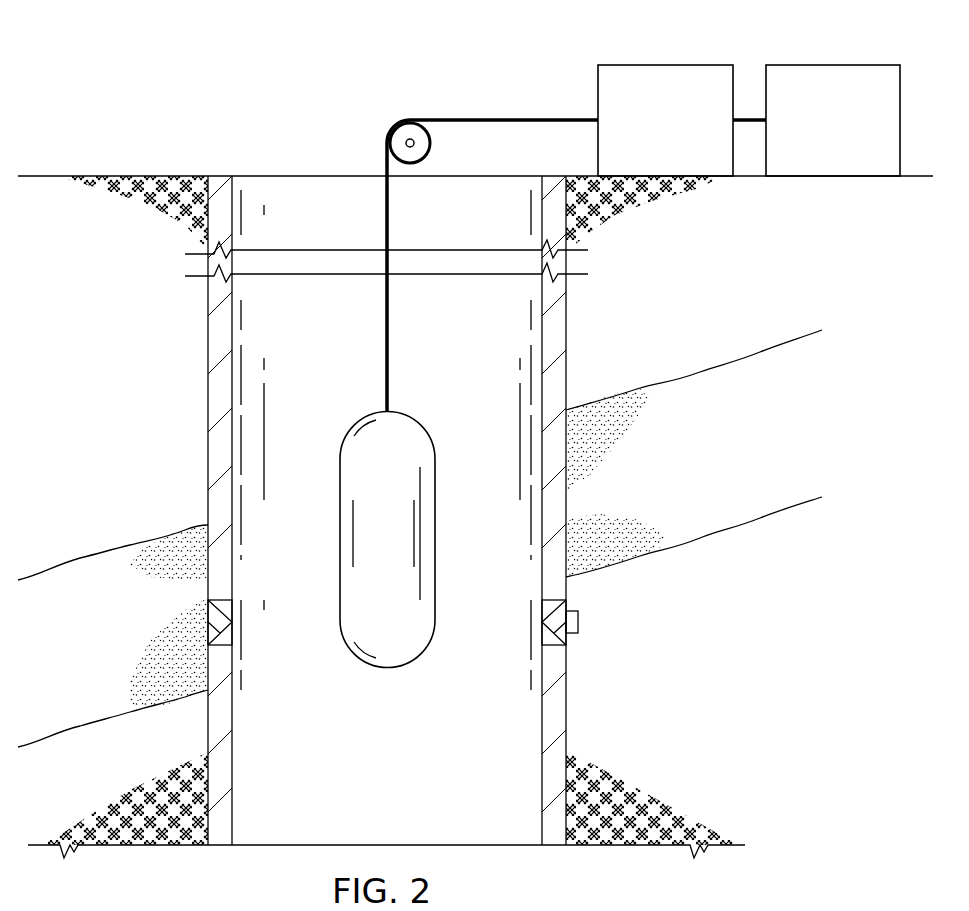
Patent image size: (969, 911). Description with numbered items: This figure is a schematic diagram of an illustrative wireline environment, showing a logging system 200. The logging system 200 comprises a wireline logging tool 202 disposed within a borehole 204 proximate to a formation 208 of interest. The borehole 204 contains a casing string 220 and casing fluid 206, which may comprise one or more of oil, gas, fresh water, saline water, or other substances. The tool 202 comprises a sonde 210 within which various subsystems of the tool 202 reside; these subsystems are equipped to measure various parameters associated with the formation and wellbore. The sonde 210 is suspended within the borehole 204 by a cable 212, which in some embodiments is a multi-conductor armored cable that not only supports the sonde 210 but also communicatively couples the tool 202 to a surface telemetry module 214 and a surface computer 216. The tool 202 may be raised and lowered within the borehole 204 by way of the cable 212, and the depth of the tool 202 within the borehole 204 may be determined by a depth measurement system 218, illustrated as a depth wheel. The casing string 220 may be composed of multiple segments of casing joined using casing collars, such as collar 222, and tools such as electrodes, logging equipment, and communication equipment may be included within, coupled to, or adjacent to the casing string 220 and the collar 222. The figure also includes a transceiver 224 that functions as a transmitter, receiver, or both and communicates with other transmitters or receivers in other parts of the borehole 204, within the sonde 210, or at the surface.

The logging system 200 is at (138, 72).
The wireline logging tool 202 is at (448, 386).
The borehole 204 is at (306, 150).
The casing fluid 206 is at (516, 559).
The formation 208 is at (712, 472).
The sonde 210 is at (368, 410).
The cable 212 is at (384, 222).
The surface telemetry module 214 is at (666, 64).
The surface computer 216 is at (834, 64).
The depth measurement system 218 is at (434, 148).
The casing string 220 is at (212, 352).
The collar 222 is at (226, 626).
The transceiver 224 is at (578, 624).